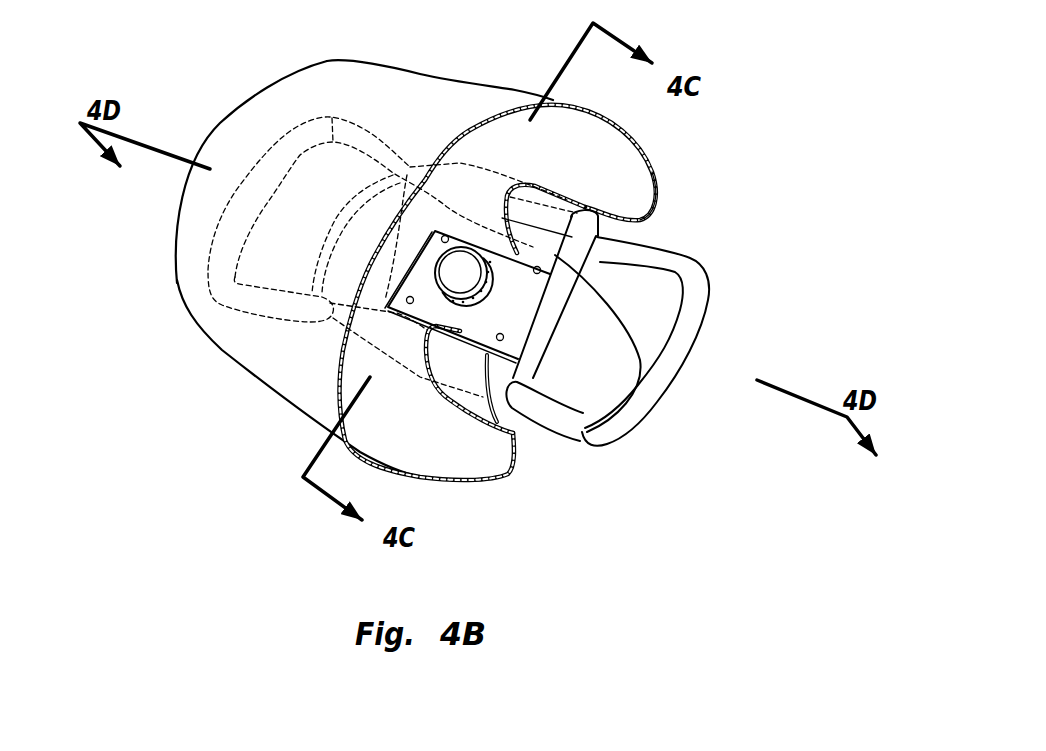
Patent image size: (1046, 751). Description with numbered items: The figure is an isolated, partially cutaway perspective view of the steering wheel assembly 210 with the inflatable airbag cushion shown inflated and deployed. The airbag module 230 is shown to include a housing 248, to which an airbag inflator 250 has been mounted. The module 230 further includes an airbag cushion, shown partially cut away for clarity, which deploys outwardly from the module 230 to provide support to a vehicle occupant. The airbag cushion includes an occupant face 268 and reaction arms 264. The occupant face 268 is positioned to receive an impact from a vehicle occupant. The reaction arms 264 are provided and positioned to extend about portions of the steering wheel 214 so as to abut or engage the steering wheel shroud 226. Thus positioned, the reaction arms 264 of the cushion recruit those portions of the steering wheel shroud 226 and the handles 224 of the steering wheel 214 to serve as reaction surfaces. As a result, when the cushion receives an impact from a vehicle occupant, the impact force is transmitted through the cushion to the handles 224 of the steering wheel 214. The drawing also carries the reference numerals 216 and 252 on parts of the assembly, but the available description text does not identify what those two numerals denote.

The steering wheel assembly 210 is at (745, 250).
The steering wheel 214 is at (444, 208).
The cushion pad 216 is at (534, 205).
The handles 224 is at (277, 152).
The steering wheel shroud 226 is at (607, 307).
The airbag module 230 is at (666, 232).
The housing 248 is at (655, 388).
The airbag inflator 250 is at (457, 285).
The sensor mounting plate 252 is at (500, 336).
The reaction arms 264 is at (656, 232).
The occupant face 268 is at (331, 209).